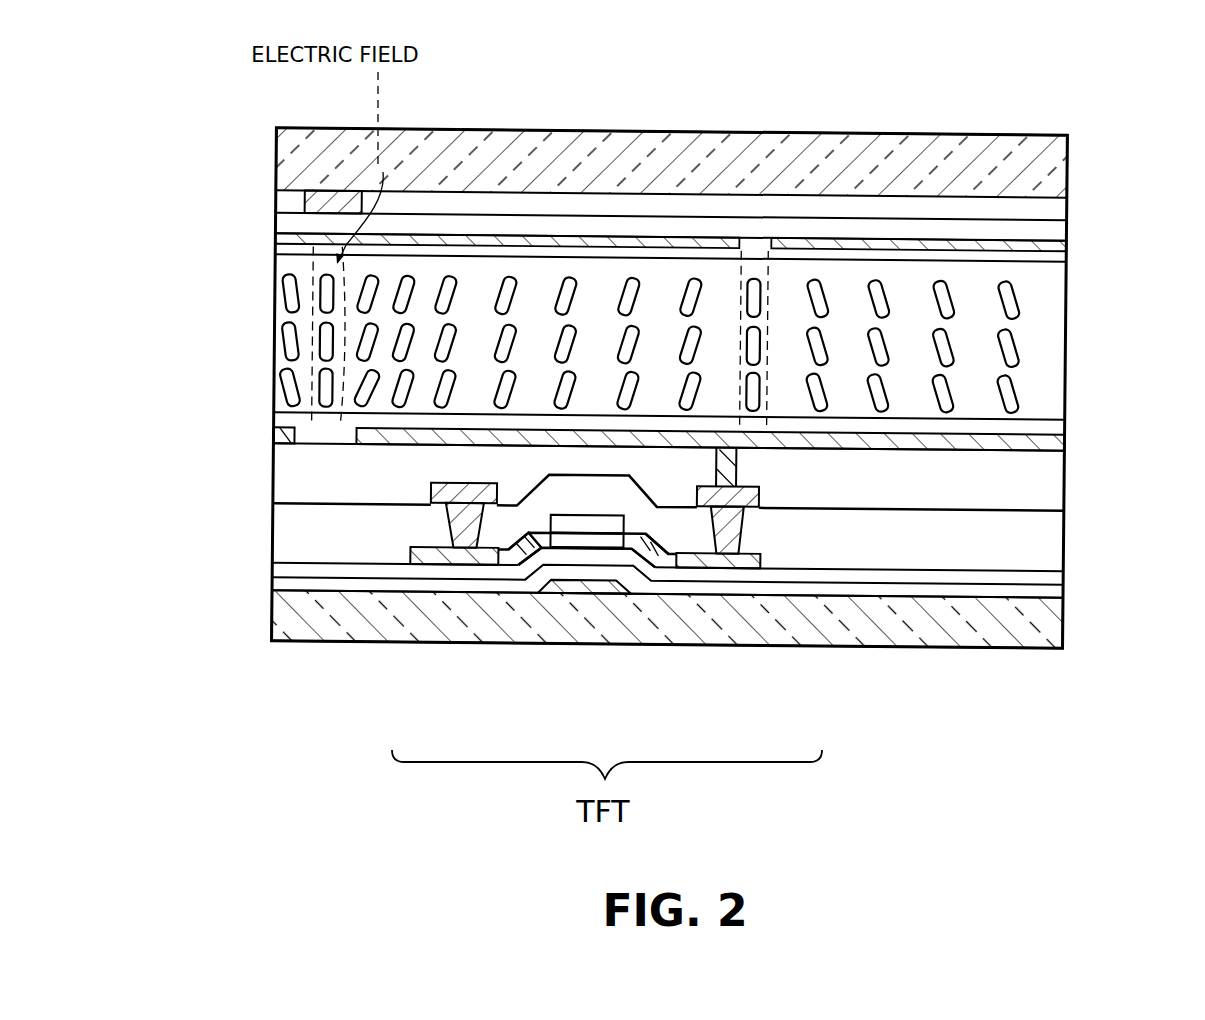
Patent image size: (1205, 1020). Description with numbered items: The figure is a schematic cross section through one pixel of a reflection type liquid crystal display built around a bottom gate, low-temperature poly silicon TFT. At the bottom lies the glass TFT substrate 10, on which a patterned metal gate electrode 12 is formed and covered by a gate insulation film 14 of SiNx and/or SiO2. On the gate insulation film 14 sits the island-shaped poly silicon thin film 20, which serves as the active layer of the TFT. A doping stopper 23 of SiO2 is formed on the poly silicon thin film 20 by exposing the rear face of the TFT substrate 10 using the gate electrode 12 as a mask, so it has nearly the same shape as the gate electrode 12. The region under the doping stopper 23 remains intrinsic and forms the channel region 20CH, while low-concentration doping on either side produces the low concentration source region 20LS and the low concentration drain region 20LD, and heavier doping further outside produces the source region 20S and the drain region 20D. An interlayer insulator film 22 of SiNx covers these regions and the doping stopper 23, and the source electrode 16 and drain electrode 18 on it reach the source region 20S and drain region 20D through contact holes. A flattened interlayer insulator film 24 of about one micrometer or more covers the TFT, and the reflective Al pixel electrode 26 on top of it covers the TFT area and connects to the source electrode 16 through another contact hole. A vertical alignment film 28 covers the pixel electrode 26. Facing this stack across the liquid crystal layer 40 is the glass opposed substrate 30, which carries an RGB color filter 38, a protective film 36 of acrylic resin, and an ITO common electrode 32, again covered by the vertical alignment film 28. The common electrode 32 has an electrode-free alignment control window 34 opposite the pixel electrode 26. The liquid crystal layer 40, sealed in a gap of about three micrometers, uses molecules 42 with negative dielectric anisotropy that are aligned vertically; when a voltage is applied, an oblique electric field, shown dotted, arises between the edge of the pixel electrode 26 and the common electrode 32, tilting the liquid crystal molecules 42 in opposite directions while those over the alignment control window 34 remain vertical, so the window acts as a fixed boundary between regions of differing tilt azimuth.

The TFT substrate 10 is at (303, 626).
The gate electrode 12 is at (578, 596).
The gate insulation film 14 is at (1075, 568).
The source electrode 16 is at (762, 494).
The drain electrode 18 is at (452, 482).
The poly silicon thin film 20 is at (767, 560).
The drain region 20D is at (430, 567).
The low concentration drain region 20LD is at (514, 560).
The channel region 20CH is at (580, 534).
The low concentration source region 20LS is at (667, 569).
The source region 20S is at (728, 568).
The interlayer insulator film 22 is at (1055, 540).
The doping stopper 23 is at (607, 527).
The flattened interlayer insulator film 24 is at (1055, 488).
The pixel electrode 26 is at (1066, 438).
The vertical alignment film 28 is at (1063, 257).
The opposed substrate 30 is at (1054, 191).
The common electrode 32 is at (1064, 245).
The alignment control window 34 is at (757, 247).
The protective film 36 is at (1063, 230).
The RGB color filter 38 is at (960, 207).
The liquid crystal layer 40 is at (272, 257).
The liquid crystal molecule 42 is at (368, 370).